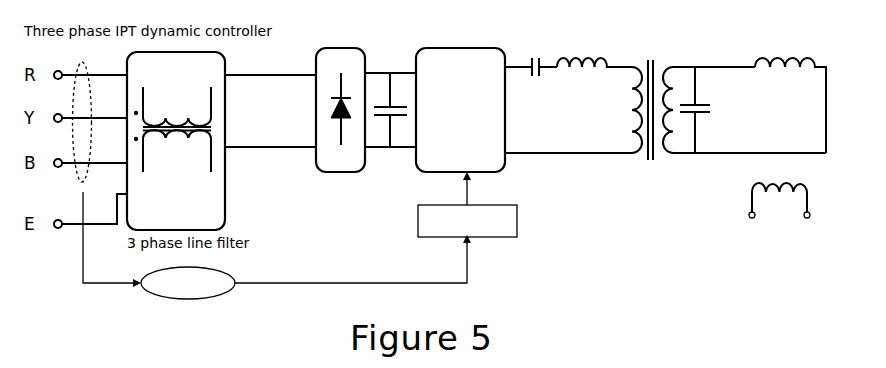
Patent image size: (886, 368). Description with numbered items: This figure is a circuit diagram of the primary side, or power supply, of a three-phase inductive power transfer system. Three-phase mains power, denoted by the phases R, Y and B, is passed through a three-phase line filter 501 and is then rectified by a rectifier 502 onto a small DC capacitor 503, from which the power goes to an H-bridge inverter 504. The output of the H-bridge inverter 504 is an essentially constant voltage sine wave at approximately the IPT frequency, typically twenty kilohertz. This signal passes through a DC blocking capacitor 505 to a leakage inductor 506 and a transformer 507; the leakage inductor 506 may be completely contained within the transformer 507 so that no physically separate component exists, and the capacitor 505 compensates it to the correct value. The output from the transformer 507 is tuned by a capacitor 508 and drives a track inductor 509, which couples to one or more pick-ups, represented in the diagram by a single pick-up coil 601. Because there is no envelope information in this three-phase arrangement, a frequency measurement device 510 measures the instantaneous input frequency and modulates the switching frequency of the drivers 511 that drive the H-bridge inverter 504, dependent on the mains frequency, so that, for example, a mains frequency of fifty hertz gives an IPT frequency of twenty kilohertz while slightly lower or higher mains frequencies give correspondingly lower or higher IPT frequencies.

The 3 phase line filter 501 is at (176, 141).
The rectifier 502 is at (340, 120).
The DC capacitor 503 is at (390, 120).
The H-bridge inverter 504 is at (460, 120).
The DC blocking capacitor 505 is at (531, 58).
The leakage inductor 506 is at (594, 54).
The transformer 507 is at (589, 102).
The capacitor 508 is at (700, 110).
The track inductor 509 is at (790, 97).
The frequency measurement device 510 is at (277, 245).
The drivers 511 is at (481, 204).
The pick-up coil 601 is at (742, 209).